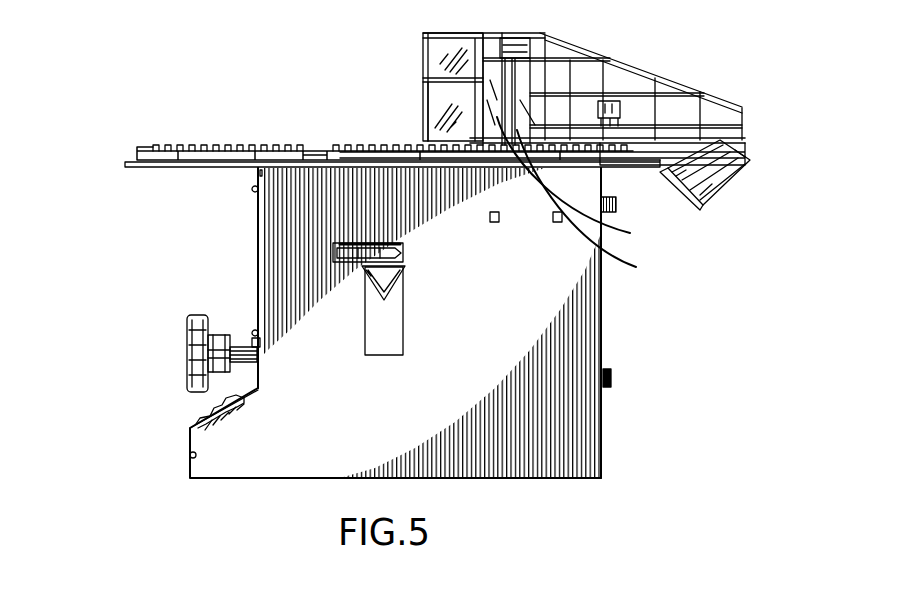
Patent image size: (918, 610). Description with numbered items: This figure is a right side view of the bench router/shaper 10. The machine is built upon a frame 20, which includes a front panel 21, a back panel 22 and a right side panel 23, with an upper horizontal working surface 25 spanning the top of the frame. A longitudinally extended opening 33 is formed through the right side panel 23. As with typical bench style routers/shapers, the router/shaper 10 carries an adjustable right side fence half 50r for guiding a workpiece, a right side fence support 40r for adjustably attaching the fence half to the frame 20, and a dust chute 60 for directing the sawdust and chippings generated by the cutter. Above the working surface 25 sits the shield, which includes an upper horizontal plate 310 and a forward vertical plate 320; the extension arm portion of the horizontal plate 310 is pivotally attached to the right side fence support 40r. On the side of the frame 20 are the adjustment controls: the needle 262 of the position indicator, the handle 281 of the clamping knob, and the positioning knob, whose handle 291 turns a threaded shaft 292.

The router/shaper 10 is at (345, 115).
The frame 20 is at (359, 328).
The front panel 21 is at (220, 278).
The back panel 22 is at (636, 323).
The right side panel 23 is at (504, 345).
The upper horizontal working surface 25 is at (398, 126).
The longitudinally extended opening in right panel 33 is at (401, 337).
The needle 262 is at (419, 269).
The handle 281 is at (424, 309).
The handle 291 is at (163, 353).
The threaded shaft 292 is at (219, 313).
The upper horizontal plate 310 is at (446, 84).
The forward vertical plate 320 is at (409, 106).
The right side fence support 40r is at (588, 189).
The right side fence half 50r is at (596, 213).
The dust chute 60 is at (705, 126).